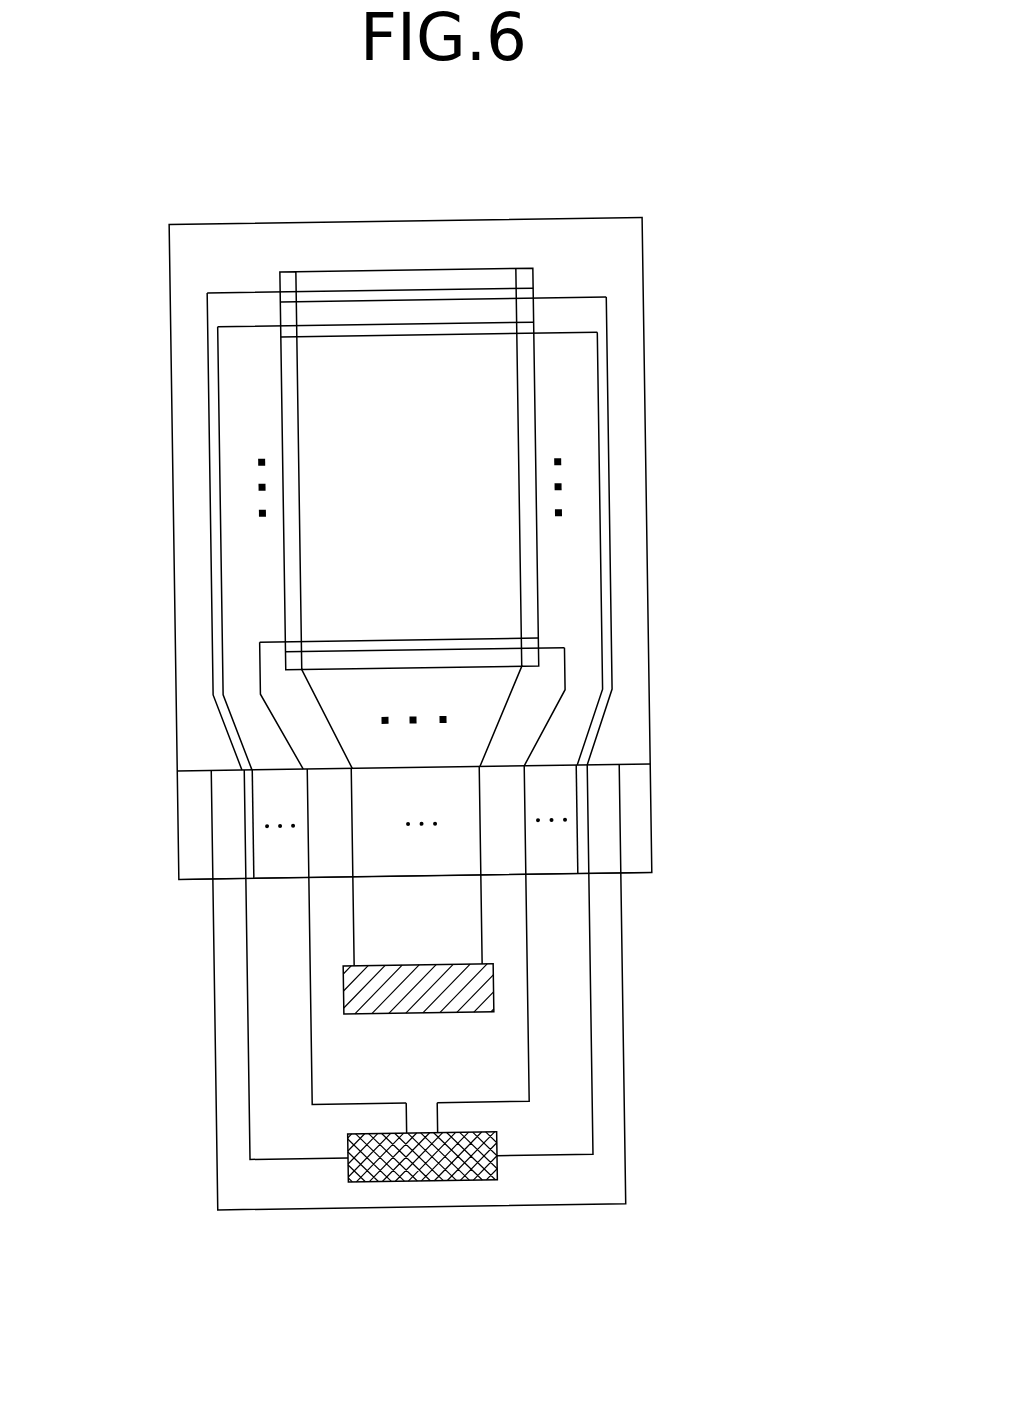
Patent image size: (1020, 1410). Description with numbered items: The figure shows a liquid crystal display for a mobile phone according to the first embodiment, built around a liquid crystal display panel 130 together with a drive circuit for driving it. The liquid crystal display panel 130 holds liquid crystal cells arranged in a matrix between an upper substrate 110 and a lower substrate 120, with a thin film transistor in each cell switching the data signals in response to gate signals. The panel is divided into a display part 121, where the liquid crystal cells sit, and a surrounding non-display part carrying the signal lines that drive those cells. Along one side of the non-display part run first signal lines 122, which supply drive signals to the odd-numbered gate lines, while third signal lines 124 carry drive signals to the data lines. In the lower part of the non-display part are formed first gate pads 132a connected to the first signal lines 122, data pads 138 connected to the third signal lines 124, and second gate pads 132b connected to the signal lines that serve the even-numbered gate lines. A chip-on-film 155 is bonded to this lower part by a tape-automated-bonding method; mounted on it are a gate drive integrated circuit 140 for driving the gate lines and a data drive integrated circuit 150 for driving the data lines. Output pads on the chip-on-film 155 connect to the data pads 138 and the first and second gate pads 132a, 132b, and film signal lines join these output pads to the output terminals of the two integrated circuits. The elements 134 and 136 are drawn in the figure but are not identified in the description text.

The upper substrate 110 is at (631, 728).
The lower substrate 120 is at (634, 814).
The display part 121 is at (452, 448).
The first signal lines 122 is at (186, 552).
The third signal lines 124 is at (321, 707).
The liquid crystal display panel 130 is at (647, 438).
The first gate pads 132a is at (248, 850).
The second gate pads 132b is at (584, 825).
The power line 134 is at (239, 1073).
The gate driver IC 136 is at (474, 958).
The data pads 138 is at (397, 862).
The gate drive integrated circuit 140 is at (411, 1175).
The data drive integrated circuit 150 is at (356, 1016).
The chip-on-film 155 is at (617, 1205).